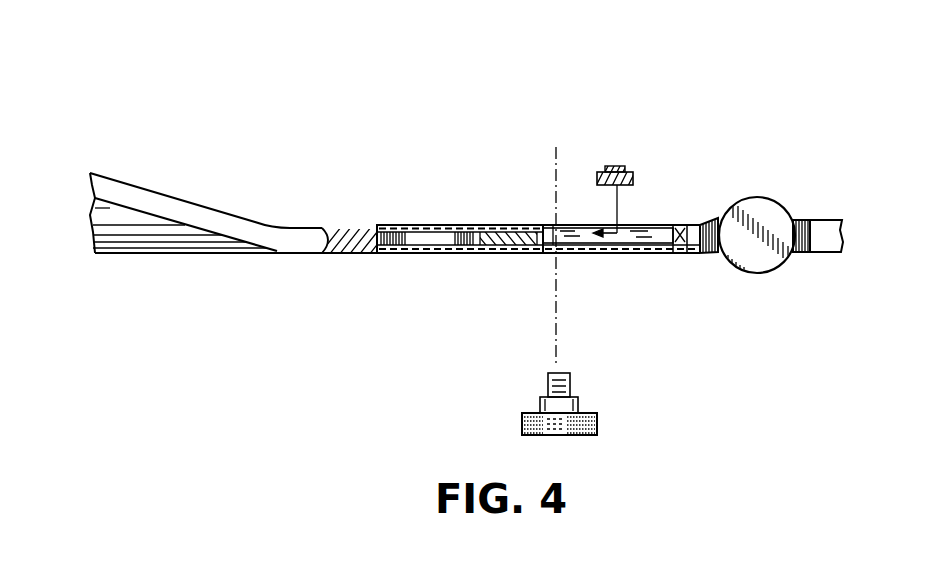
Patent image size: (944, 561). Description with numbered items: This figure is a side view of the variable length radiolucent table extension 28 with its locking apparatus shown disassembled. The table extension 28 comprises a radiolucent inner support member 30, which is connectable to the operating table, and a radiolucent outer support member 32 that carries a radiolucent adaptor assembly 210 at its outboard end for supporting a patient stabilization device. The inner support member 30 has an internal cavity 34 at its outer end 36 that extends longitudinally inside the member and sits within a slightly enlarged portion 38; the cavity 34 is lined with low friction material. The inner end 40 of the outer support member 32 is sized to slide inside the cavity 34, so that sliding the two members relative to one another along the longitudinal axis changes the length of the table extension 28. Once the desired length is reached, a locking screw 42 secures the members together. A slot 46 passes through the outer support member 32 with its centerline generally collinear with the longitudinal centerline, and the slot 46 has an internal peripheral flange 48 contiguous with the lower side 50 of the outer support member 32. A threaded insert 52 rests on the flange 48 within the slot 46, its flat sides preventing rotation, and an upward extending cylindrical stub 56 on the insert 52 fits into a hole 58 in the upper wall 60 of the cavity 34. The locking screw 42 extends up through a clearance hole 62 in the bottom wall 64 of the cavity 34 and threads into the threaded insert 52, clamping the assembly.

The table extension 28 is at (639, 83).
The inner support member 30 is at (240, 214).
The outer support member 32 is at (685, 254).
The cavity 34 is at (408, 236).
The outer end 36 is at (600, 253).
The enlarged portion 38 is at (435, 256).
The inner end 40 is at (468, 236).
The locking screw 42 is at (590, 436).
The slot 46 is at (657, 236).
The internal peripheral flange 48 is at (648, 253).
The lower side 50 is at (665, 253).
The threaded insert 52 is at (636, 172).
The cylindrical stub 56 is at (611, 166).
The hole 58 is at (553, 222).
The upper wall 60 is at (497, 225).
The clearance hole 62 is at (552, 253).
The bottom wall 64 is at (386, 254).
The adaptor assembly 210 is at (798, 169).